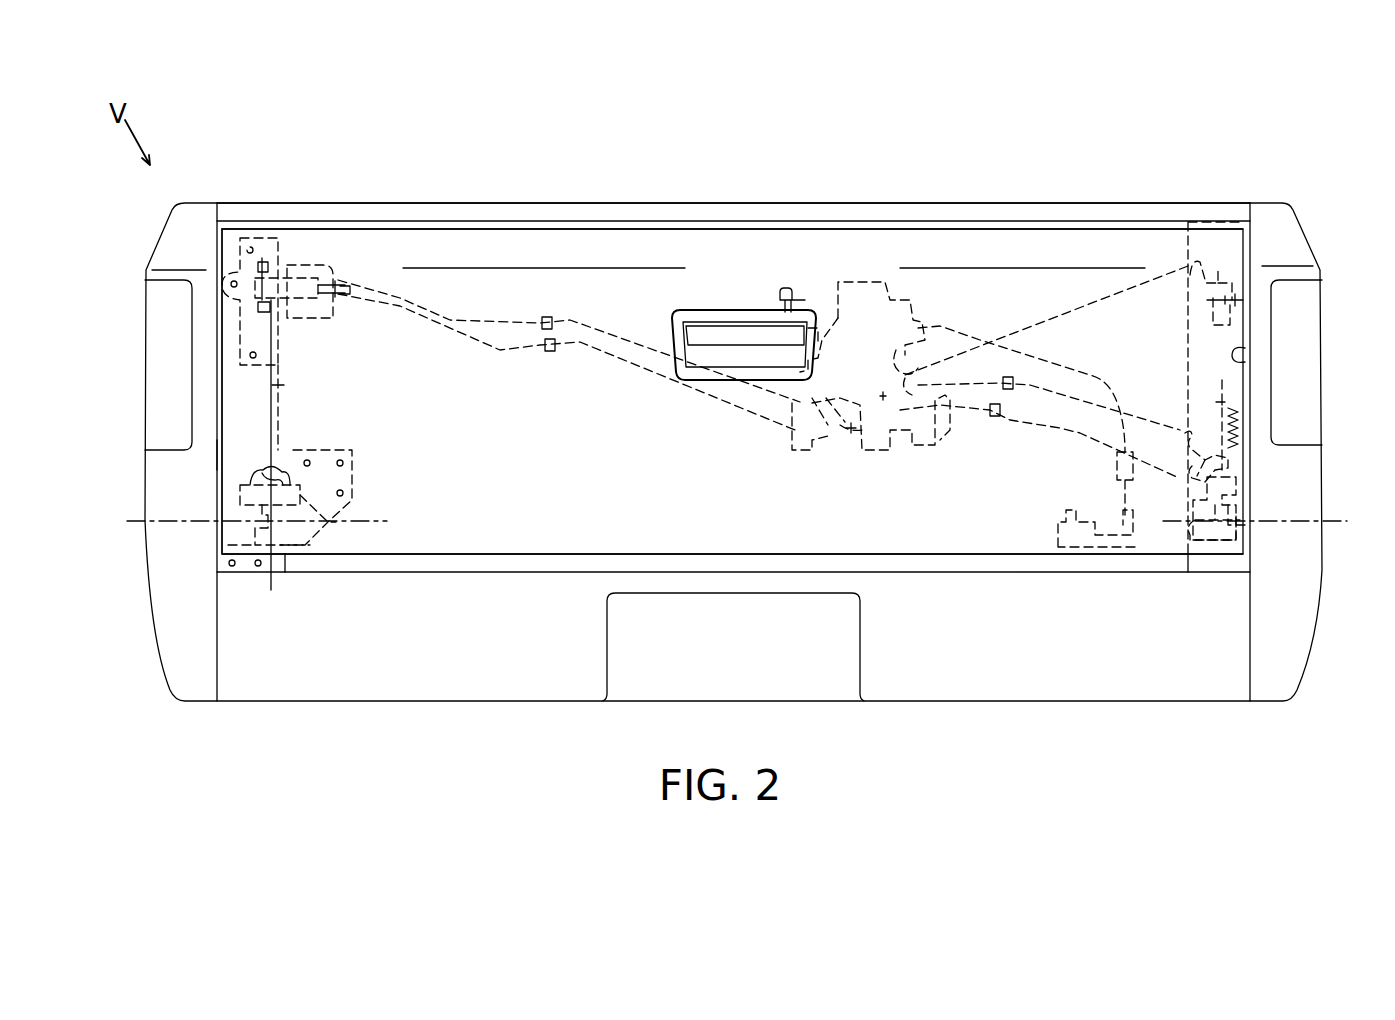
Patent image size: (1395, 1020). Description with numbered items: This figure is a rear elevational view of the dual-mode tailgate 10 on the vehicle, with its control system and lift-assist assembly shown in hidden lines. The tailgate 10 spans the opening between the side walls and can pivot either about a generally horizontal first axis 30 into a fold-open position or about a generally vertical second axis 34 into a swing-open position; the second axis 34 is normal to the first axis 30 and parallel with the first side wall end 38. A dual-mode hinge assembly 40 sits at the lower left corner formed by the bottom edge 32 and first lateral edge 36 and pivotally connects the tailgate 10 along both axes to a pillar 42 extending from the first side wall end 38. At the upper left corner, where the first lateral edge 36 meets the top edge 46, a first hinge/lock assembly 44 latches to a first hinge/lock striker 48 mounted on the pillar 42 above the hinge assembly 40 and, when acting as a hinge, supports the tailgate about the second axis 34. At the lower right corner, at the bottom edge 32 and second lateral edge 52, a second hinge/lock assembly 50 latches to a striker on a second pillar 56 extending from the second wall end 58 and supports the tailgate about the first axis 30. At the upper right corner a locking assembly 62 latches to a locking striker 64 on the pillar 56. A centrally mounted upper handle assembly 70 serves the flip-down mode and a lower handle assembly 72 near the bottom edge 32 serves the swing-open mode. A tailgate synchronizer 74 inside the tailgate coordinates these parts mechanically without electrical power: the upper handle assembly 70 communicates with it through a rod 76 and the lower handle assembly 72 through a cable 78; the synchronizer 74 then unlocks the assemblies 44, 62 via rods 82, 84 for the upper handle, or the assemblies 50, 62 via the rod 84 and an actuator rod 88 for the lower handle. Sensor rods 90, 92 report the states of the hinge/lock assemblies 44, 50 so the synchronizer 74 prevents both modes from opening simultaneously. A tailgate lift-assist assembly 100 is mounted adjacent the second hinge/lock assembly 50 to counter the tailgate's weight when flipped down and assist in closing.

The dual-mode tailgate 10 is at (656, 197).
The first axis 30 is at (137, 523).
The bottom edge 32 is at (454, 575).
The second axis 34 is at (262, 258).
The first lateral edge 36 is at (215, 455).
The first side wall end 38 is at (218, 414).
The dual-mode hinge assembly 40 is at (355, 492).
The pillar 42 is at (283, 388).
The first hinge/lock assembly 44 is at (290, 256).
The top edge 46 is at (470, 202).
The first hinge/lock striker 48 is at (243, 303).
The second hinge/lock assembly 50 is at (1188, 532).
The second lateral edge 52 is at (1250, 472).
The pillar 56 is at (1186, 346).
The second wall end 58 is at (1245, 348).
The locking assembly 62 is at (1237, 268).
The locking striker 64 is at (1248, 297).
The upper handle assembly 70 is at (731, 330).
The lower handle assembly 72 is at (1082, 540).
The tailgate synchronizer 74 is at (886, 270).
The rod 76 is at (800, 300).
The cable 78 is at (1120, 375).
The rod 82 is at (580, 325).
The rod 84 is at (1108, 296).
The actuator rod 88 is at (1070, 425).
The sensor rod 90 is at (620, 358).
The sensor rod 92 is at (1015, 427).
The tailgate lift-assist assembly 100 is at (1248, 434).